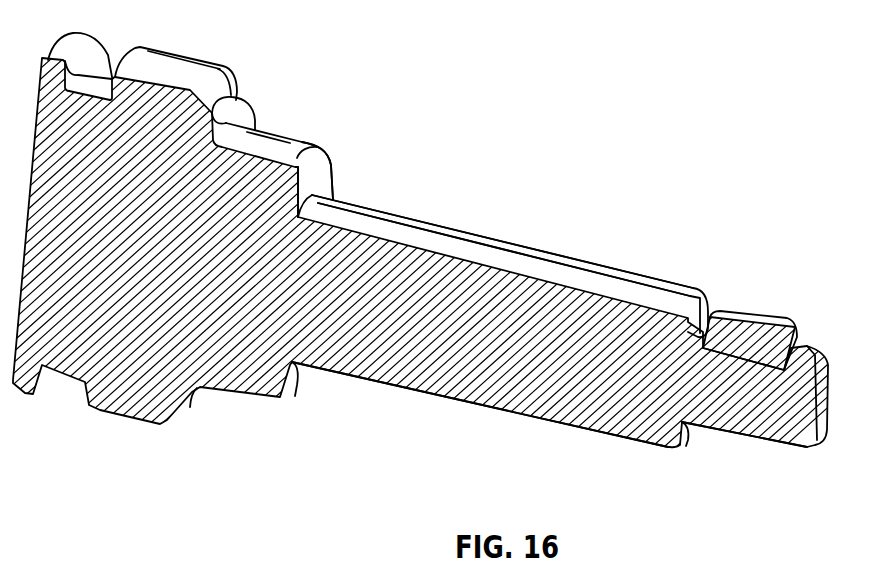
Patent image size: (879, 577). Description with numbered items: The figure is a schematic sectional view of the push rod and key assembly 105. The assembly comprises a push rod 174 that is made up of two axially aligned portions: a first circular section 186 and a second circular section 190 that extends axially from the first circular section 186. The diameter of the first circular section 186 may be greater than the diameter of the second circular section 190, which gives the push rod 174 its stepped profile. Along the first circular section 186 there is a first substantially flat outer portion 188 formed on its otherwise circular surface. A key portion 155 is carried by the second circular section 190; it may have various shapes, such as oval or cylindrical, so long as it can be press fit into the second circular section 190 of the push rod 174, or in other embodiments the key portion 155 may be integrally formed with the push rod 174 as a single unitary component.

The push rod and key assembly 105 is at (653, 172).
The push rod 174 is at (305, 132).
The first substantially flat outer portion 188 is at (482, 252).
The key portion 155 is at (752, 328).
The first circular section 186 is at (417, 390).
The second circular section 190 is at (753, 430).